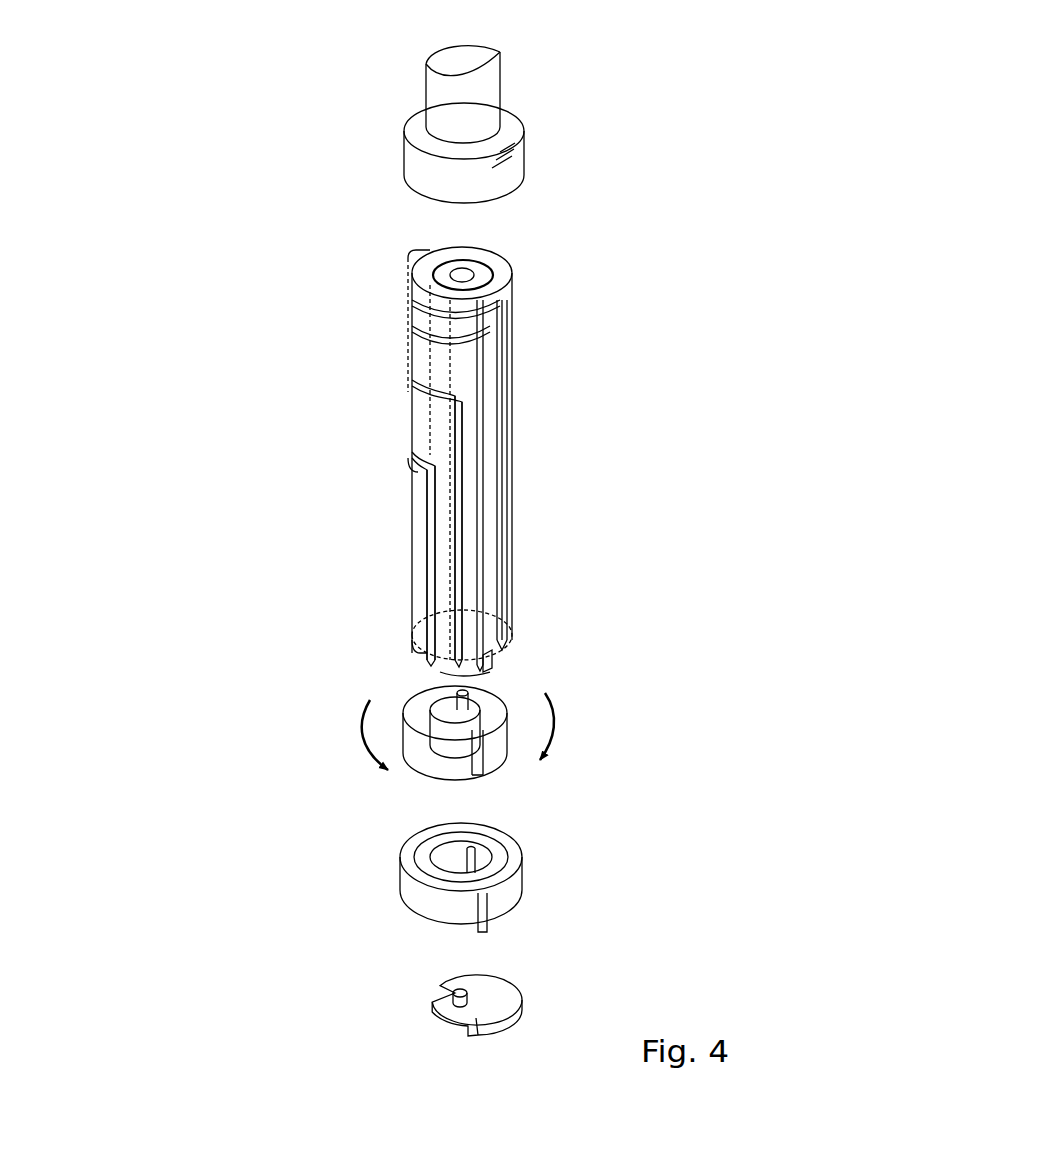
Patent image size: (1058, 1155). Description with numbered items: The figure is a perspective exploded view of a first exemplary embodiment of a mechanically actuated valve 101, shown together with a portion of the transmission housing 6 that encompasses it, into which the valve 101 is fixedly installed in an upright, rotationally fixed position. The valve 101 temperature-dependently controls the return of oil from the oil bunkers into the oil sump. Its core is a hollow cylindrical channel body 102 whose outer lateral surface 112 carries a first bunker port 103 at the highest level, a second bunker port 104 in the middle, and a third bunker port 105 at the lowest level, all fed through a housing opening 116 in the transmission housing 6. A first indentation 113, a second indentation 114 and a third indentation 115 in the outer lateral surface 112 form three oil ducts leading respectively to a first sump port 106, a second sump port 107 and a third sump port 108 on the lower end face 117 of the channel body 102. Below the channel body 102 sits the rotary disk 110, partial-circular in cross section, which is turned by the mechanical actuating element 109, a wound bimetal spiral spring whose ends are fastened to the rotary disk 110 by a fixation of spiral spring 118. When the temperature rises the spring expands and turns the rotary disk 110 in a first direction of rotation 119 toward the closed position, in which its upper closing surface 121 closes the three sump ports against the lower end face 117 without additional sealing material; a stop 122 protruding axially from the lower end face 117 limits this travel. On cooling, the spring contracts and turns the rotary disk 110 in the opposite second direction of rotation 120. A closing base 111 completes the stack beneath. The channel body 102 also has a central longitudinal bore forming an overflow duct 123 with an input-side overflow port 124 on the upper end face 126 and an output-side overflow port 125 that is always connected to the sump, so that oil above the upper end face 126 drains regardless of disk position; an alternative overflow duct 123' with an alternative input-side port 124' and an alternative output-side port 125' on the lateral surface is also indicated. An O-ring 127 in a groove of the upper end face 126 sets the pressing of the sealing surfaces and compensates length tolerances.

The transmission housing 6 is at (455, 100).
The valve 101 is at (373, 250).
The channel body 102 is at (527, 345).
The first bunker port 103 is at (408, 330).
The second bunker port 104 is at (408, 388).
The third bunker port 105 is at (410, 455).
The first sump port 106 is at (495, 650).
The second sump port 107 is at (490, 680).
The third sump port 108 is at (428, 652).
The mechanical actuating element 109 is at (520, 885).
The rotary disk 110 is at (430, 770).
The closing base 111 is at (505, 985).
The outer lateral surface 112 is at (515, 300).
The first indentation 113 is at (462, 452).
The second indentation 114 is at (462, 510).
The third indentation 115 is at (428, 537).
The housing opening 116 is at (408, 420).
The lower end face 117 is at (445, 670).
The fixation of spiral spring 118 is at (478, 738).
The first direction of rotation 119 is at (370, 756).
The second direction of rotation 120 is at (556, 722).
The upper closing surface 121 is at (422, 713).
The stop 122 is at (495, 665).
The overflow duct 123 is at (592, 482).
The alternative overflow duct 123' is at (610, 431).
The input-side overflow port 124 is at (360, 202).
The alternative input-side overflow port 124' is at (353, 270).
The output-side overflow port 125 is at (330, 599).
The alternative output-side overflow port 125' is at (605, 577).
The upper end face 126 is at (492, 285).
The O-ring 127 is at (470, 268).